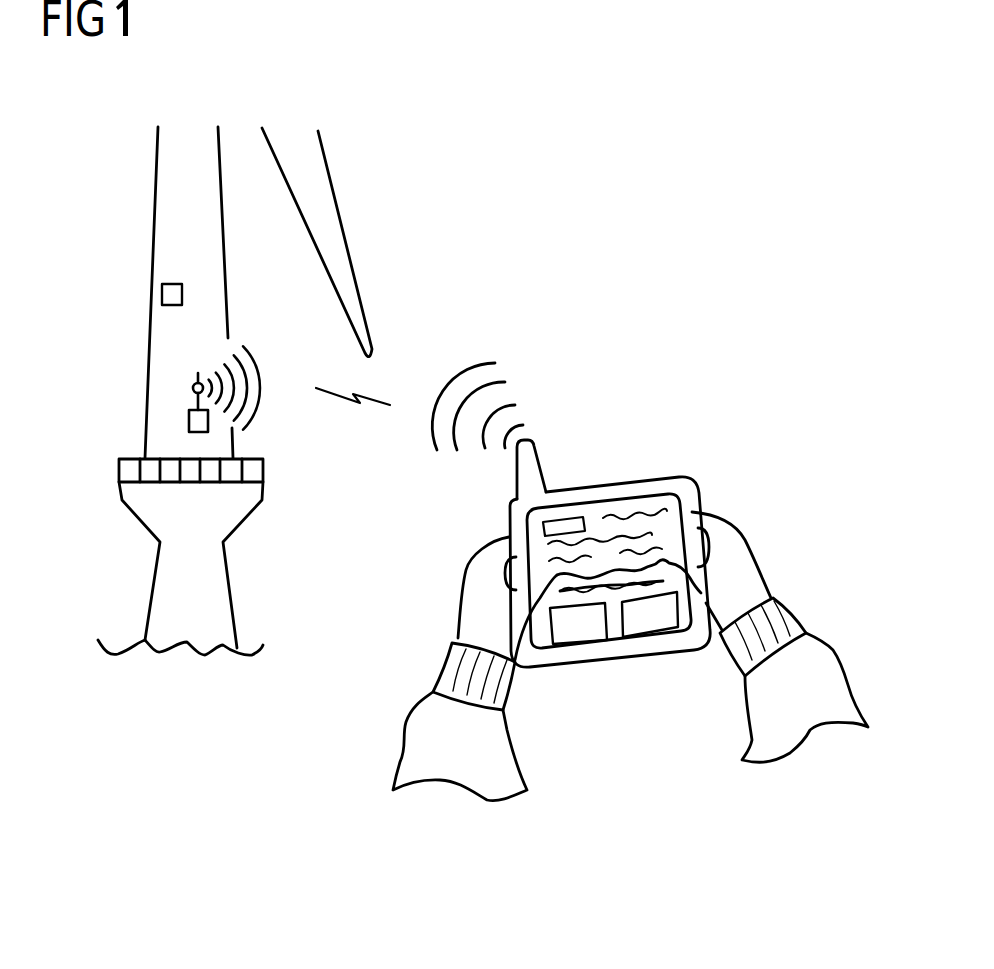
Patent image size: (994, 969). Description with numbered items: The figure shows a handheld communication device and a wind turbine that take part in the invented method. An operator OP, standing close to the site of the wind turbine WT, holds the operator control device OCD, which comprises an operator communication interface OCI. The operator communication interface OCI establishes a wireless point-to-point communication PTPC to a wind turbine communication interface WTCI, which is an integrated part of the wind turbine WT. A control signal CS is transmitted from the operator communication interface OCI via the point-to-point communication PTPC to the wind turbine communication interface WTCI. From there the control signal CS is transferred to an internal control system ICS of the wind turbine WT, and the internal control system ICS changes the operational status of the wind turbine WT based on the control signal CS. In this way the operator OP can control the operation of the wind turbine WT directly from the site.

The wind turbine WT is at (172, 209).
The internal control system ICS is at (170, 292).
The wind turbine communication interface WTCI is at (178, 388).
The point-to-point communication PTPC is at (278, 349).
The control signal CS is at (348, 415).
The operator communication interface OCI is at (567, 473).
The operator control device OCD is at (625, 676).
The operator OP is at (827, 670).